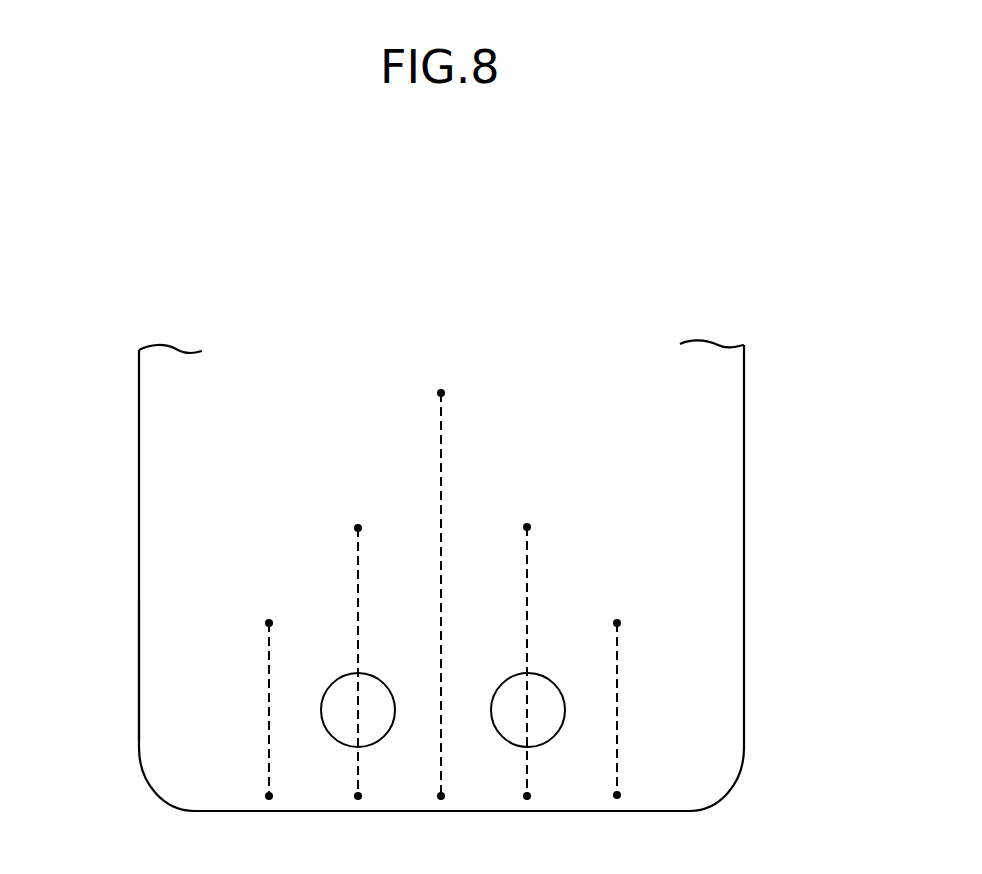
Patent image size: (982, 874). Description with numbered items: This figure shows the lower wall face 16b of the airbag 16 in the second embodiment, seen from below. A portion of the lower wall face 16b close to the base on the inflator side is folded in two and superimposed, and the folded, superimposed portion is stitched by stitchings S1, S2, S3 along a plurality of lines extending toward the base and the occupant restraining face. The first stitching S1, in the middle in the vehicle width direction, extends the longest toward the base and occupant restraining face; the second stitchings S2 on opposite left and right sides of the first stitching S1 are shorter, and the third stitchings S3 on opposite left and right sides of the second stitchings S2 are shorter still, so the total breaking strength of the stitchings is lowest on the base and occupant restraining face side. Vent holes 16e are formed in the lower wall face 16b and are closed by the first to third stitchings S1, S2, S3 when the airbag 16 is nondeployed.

The airbag 16 is at (753, 575).
The lower wall face 16b is at (180, 664).
The vent hole 16e is at (394, 713).
The first stitching S1 is at (441, 477).
The second stitching S2 is at (358, 594).
The third stitching S3 is at (269, 683).